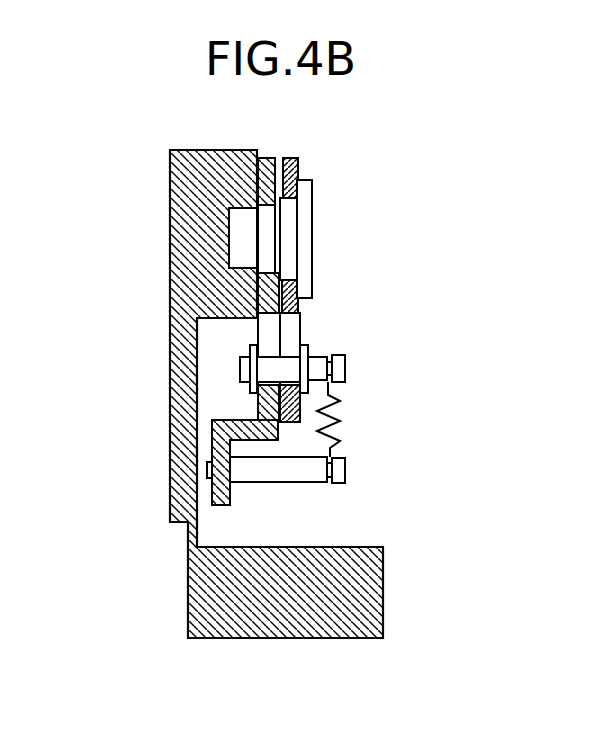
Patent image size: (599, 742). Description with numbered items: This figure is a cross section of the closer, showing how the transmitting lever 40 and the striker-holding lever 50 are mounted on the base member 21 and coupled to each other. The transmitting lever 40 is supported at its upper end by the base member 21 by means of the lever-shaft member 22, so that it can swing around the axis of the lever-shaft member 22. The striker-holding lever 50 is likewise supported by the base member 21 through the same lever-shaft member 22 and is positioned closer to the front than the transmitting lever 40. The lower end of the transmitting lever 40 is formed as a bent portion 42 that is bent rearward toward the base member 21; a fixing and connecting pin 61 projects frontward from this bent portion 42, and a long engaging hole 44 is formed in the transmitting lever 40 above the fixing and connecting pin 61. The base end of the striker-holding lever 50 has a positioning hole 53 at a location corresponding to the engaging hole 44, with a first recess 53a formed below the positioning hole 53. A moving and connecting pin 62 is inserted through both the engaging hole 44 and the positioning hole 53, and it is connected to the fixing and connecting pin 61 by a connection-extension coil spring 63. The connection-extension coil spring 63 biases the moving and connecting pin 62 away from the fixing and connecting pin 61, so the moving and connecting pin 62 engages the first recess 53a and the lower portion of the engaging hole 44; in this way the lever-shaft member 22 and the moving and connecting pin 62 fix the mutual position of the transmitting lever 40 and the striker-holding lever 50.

The base member 21 is at (170, 386).
The lever-shaft member 22 is at (312, 233).
The transmitting lever 40 is at (268, 158).
The bent portion 42 is at (222, 448).
The engaging hole 44 is at (260, 324).
The striker-holding lever 50 is at (293, 158).
The positioning hole 53 is at (292, 330).
The first recess 53a is at (265, 378).
The fixing and connecting pin 61 is at (345, 468).
The moving and connecting pin 62 is at (345, 367).
The connection-extension coil spring 63 is at (337, 423).